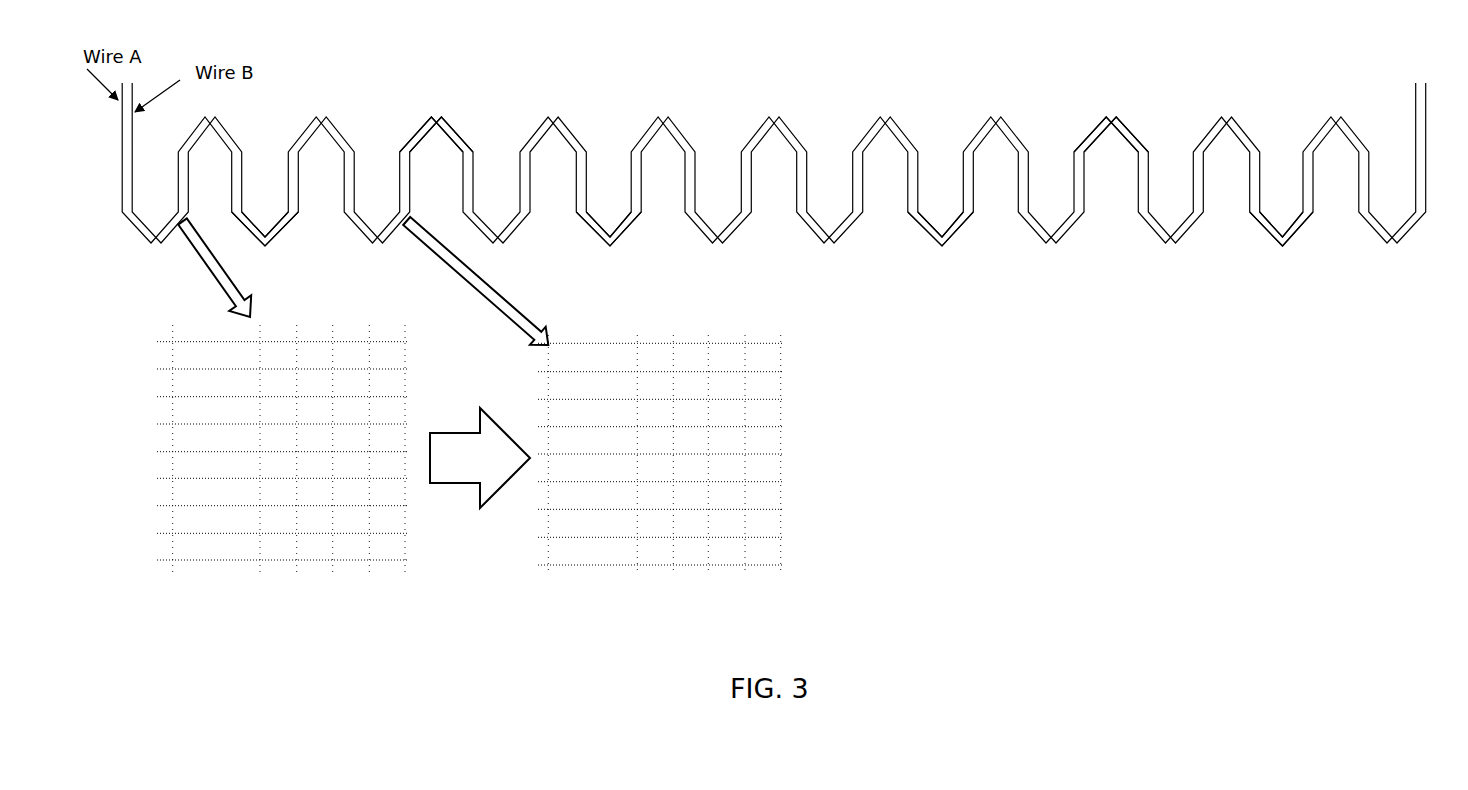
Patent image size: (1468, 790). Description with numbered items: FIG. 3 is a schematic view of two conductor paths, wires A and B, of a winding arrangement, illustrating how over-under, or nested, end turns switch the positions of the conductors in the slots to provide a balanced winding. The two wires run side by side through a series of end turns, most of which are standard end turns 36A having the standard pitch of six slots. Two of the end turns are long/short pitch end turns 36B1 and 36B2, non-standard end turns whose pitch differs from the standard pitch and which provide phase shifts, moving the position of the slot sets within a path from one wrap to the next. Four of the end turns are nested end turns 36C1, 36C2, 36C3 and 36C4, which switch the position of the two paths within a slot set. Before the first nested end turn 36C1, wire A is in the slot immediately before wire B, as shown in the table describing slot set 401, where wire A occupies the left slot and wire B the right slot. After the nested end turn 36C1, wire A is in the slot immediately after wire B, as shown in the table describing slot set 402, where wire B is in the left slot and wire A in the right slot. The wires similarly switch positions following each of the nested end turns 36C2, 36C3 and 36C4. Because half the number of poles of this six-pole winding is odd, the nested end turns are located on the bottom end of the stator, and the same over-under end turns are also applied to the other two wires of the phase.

The standard end turns 36A is at (747, 127).
The long/short pitch end turn 36B1 is at (423, 117).
The long/short pitch end turn 36B2 is at (1093, 122).
The nested end turn 36C1 is at (287, 233).
The nested end turn 36C2 is at (622, 235).
The nested end turn 36C3 is at (957, 233).
The nested end turn 36C4 is at (1297, 235).
The slot set 401 is at (365, 583).
The slot set 402 is at (577, 575).